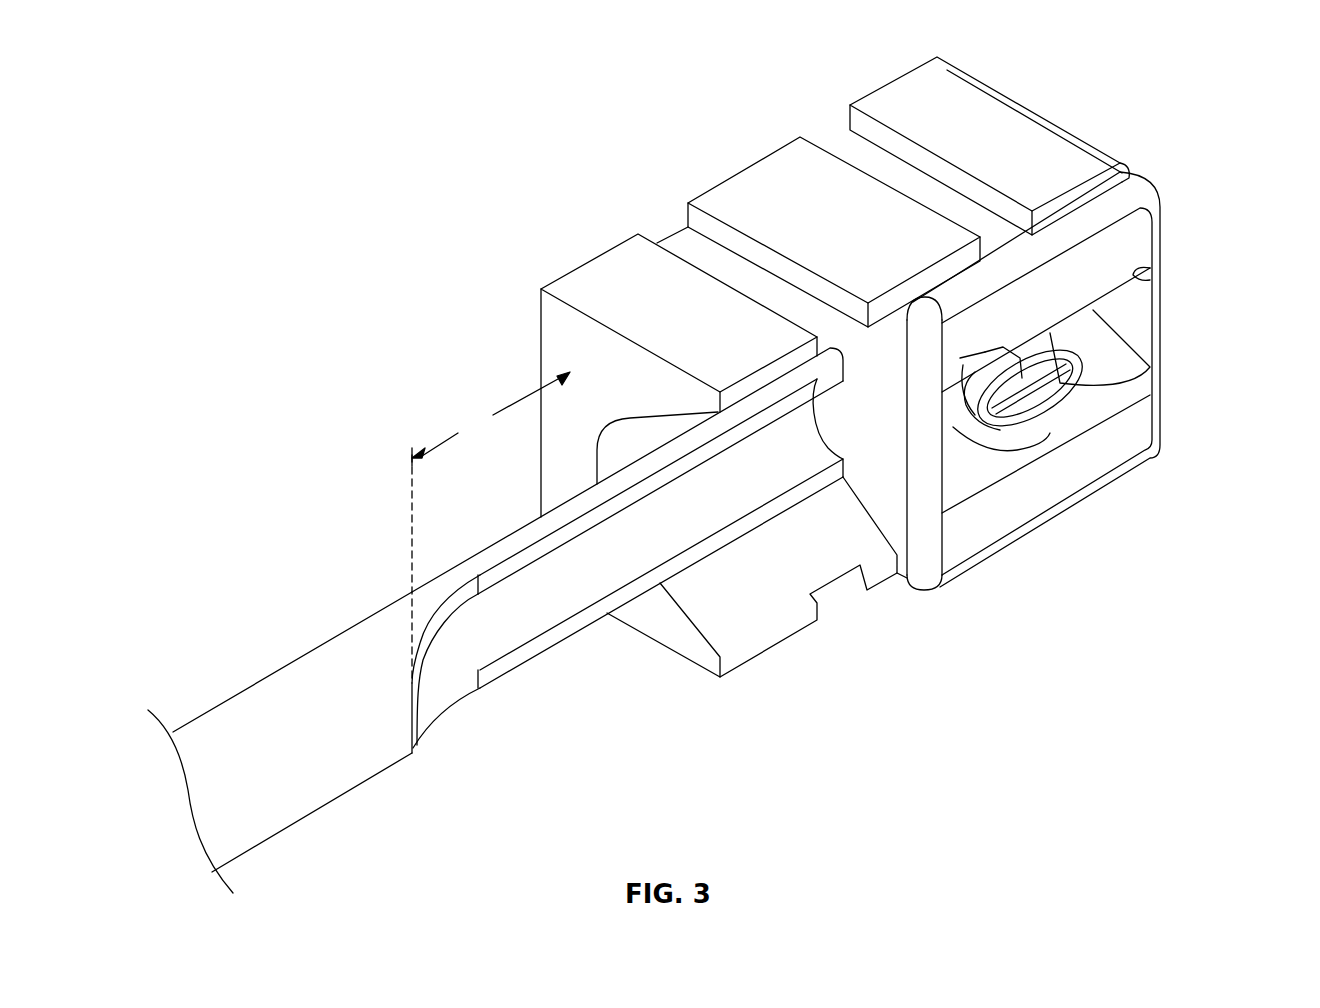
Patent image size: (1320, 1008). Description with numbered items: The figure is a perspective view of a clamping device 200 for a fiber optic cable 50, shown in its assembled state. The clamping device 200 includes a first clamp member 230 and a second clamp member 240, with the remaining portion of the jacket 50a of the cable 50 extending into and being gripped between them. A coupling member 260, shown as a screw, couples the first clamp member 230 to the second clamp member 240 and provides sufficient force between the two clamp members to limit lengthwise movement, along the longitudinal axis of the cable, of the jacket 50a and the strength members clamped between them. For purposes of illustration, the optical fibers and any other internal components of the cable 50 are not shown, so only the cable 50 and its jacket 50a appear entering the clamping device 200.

The clamping device 200 is at (788, 386).
The first clamp member 230 is at (1020, 103).
The second clamp member 240 is at (887, 468).
The coupling member 260 is at (1087, 403).
The fiber optic cable 50 is at (303, 818).
The jacket 50a is at (603, 617).